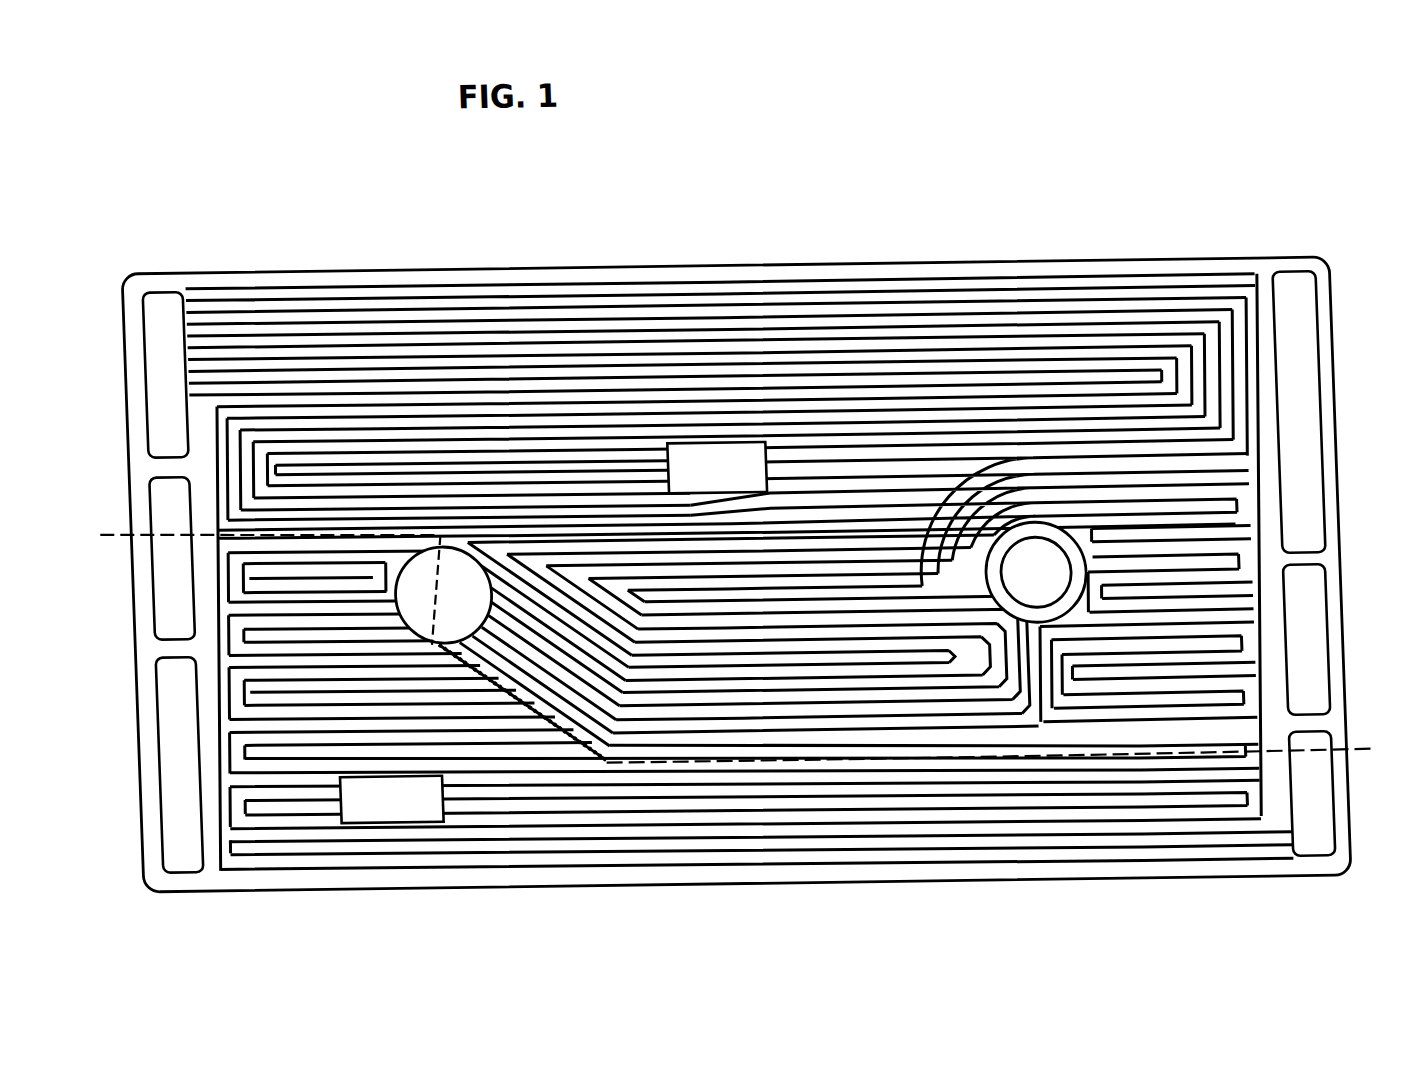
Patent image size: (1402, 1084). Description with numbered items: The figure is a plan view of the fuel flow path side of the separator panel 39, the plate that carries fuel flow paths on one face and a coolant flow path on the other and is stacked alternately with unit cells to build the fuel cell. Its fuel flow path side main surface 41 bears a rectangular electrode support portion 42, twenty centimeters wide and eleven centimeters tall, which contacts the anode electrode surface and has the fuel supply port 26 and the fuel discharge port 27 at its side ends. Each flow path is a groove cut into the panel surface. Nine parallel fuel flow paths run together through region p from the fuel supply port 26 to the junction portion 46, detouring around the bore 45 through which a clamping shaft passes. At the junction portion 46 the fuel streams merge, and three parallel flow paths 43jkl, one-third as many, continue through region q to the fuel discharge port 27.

The separator panel 39 is at (735, 566).
The fuel flow path side main surface 41 is at (734, 524).
The electrode support portion 42 is at (739, 567).
The parallel fuel flow paths 43jkl is at (1062, 574).
The fuel supply port 26 is at (166, 375).
The fuel discharge port 27 is at (1312, 793).
The bore 45 is at (1036, 572).
The junction portion 46 is at (443, 594).